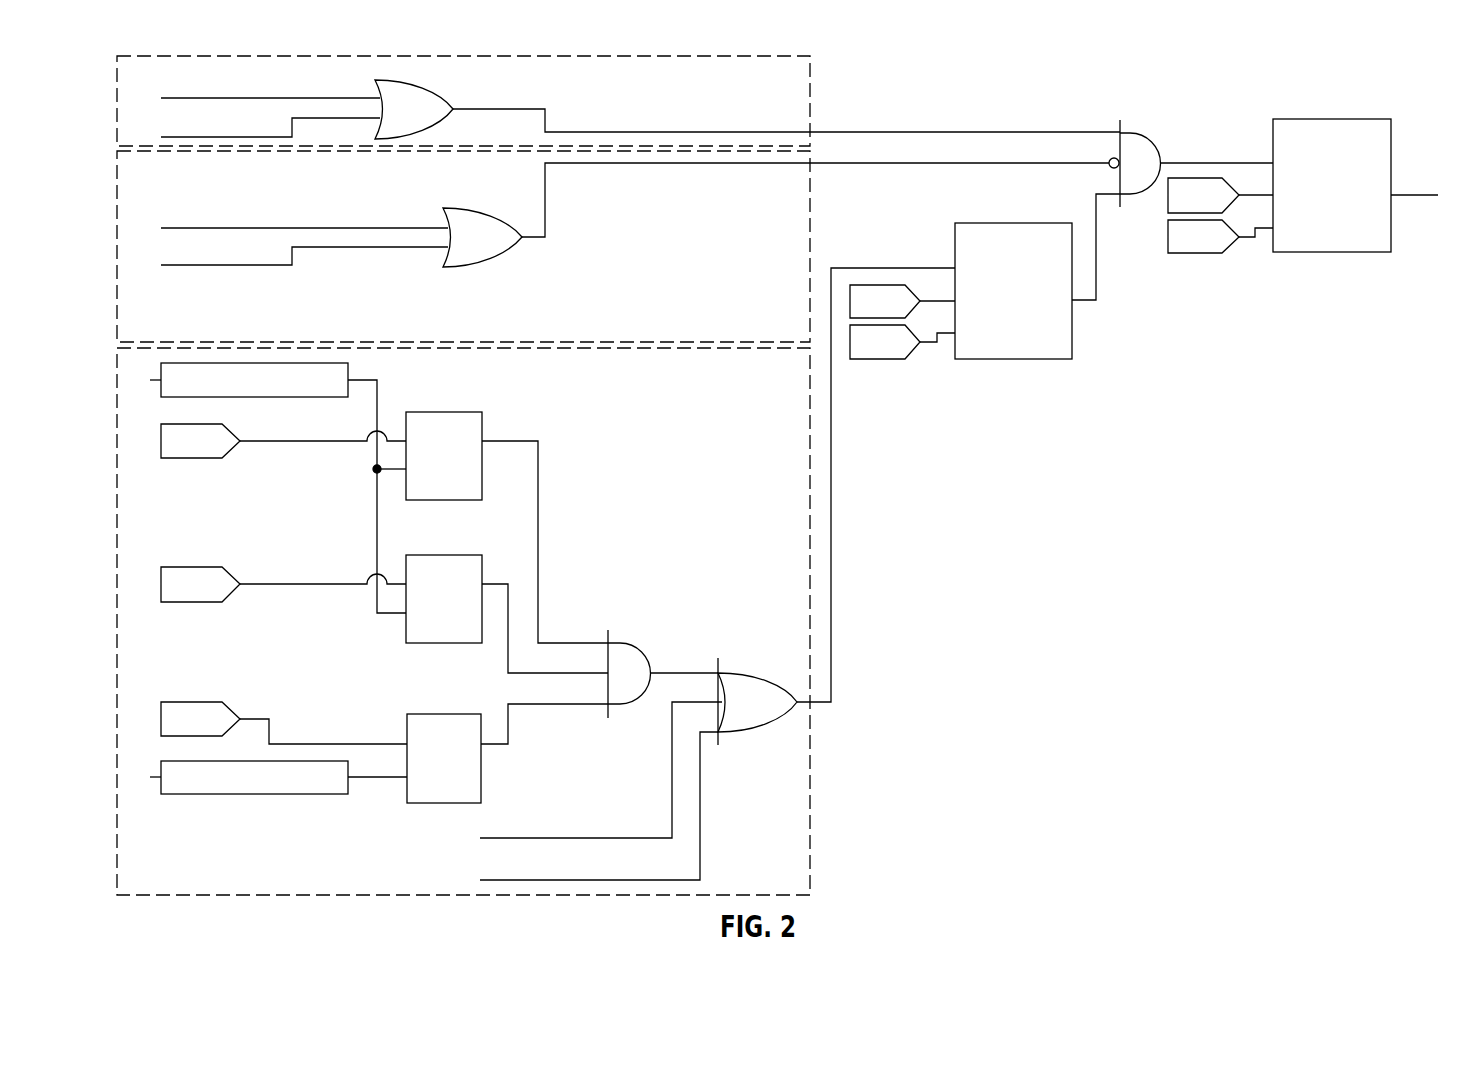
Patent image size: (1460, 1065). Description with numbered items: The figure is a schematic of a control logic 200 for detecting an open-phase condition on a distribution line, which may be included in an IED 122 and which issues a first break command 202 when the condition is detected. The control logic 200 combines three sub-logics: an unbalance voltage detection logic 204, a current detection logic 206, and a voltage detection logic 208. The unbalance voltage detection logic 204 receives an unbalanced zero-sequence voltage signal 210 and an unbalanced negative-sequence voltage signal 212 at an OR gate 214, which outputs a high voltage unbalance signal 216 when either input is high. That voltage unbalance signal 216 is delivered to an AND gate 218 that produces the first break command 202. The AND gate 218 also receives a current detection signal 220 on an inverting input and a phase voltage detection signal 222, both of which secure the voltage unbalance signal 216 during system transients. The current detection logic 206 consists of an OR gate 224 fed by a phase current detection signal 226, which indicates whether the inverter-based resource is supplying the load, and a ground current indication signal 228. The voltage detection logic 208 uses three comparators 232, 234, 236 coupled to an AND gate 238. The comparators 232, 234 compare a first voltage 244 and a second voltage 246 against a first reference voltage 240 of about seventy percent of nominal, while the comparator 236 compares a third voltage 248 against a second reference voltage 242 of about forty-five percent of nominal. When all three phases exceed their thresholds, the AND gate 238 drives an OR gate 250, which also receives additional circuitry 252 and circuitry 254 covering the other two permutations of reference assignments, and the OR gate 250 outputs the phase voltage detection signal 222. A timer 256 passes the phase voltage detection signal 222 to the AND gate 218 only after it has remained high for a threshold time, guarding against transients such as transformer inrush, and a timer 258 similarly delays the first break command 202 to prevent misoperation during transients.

The control logic 200 is at (1268, 89).
The IED 122 is at (1272, 85).
The first break command 202 is at (1215, 163).
The unbalance voltage detection logic 204 is at (117, 110).
The current detection logic 206 is at (117, 248).
The voltage detection logic 208 is at (117, 587).
The unbalanced zero-sequence voltage signal 210 is at (227, 98).
The unbalanced negative-sequence voltage signal 212 is at (227, 137).
The OR gate 214 is at (440, 93).
The voltage unbalance signal 216 is at (735, 132).
The AND gate 218 is at (1147, 137).
The current detection signal 220 is at (885, 163).
The phase voltage detection signal 222 is at (1096, 247).
The OR gate 224 is at (508, 258).
The phase current detection signal 226 is at (227, 228).
The ground current indication signal 228 is at (227, 265).
The comparator 232 is at (443, 412).
The comparator 234 is at (443, 555).
The comparator 236 is at (443, 714).
The AND gate 238 is at (642, 651).
The first reference voltage 240 is at (255, 397).
The second reference voltage 242 is at (193, 794).
The first voltage 244 is at (193, 458).
The second voltage 246 is at (195, 567).
The third voltage 248 is at (195, 702).
The OR gate 250 is at (748, 671).
The circuitry 252 is at (545, 838).
The circuitry 254 is at (545, 880).
The timer 256 is at (1013, 359).
The timer 258 is at (1332, 252).